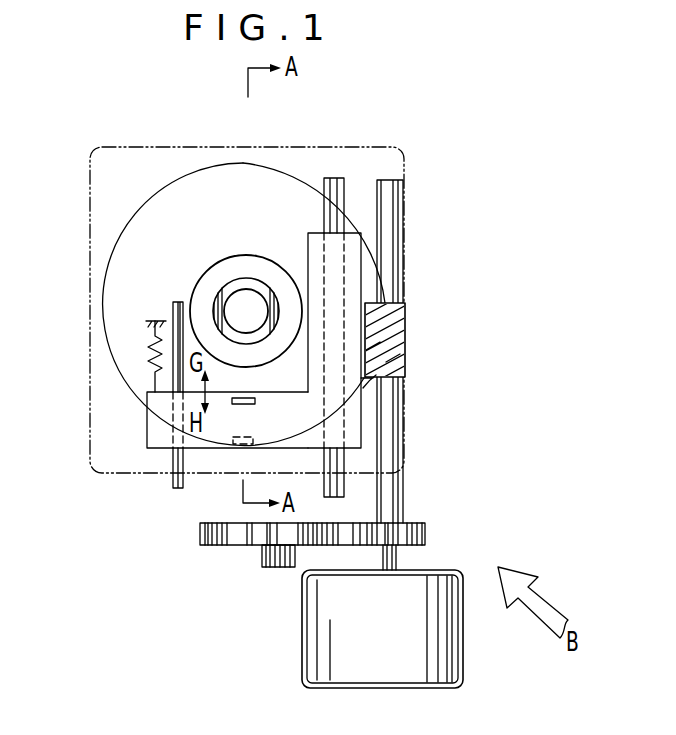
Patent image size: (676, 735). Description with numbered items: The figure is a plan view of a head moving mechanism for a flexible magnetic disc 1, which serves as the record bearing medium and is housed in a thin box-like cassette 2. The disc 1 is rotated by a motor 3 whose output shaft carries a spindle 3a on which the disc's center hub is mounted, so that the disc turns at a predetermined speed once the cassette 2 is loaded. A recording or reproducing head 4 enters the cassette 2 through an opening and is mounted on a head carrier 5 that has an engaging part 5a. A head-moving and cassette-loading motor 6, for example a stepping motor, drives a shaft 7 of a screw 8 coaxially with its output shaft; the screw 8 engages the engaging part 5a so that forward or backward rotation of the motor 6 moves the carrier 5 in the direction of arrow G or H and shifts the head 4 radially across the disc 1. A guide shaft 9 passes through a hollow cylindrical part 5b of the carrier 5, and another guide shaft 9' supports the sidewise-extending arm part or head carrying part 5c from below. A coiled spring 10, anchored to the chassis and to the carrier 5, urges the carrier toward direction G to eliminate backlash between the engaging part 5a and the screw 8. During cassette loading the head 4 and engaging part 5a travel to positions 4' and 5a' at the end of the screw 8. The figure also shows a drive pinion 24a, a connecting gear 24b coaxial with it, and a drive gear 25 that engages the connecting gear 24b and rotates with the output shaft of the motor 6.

The flexible magnetic disc 1 is at (123, 264).
The cassette 2 is at (97, 425).
The motor 3 is at (226, 278).
The spindle 3a is at (246, 294).
The recording or reproducing head 4 is at (265, 383).
The head position 4' is at (262, 424).
The head carrier 5 is at (302, 255).
The engaging part 5a is at (404, 330).
The engaging part position 5a' is at (405, 392).
The hollow cylindrical part 5b is at (350, 426).
The arm part or head carrying part 5c is at (153, 425).
The head-moving and cassette-loading motor 6 is at (452, 637).
The shaft 7 is at (390, 483).
The screw 8 is at (406, 343).
The guide shaft 9 is at (347, 328).
The guide shaft 9' is at (151, 395).
The coiled spring 10 is at (152, 360).
The drive pinion 24a is at (281, 568).
The connecting gear 24b is at (227, 545).
The drive gear 25 is at (427, 532).